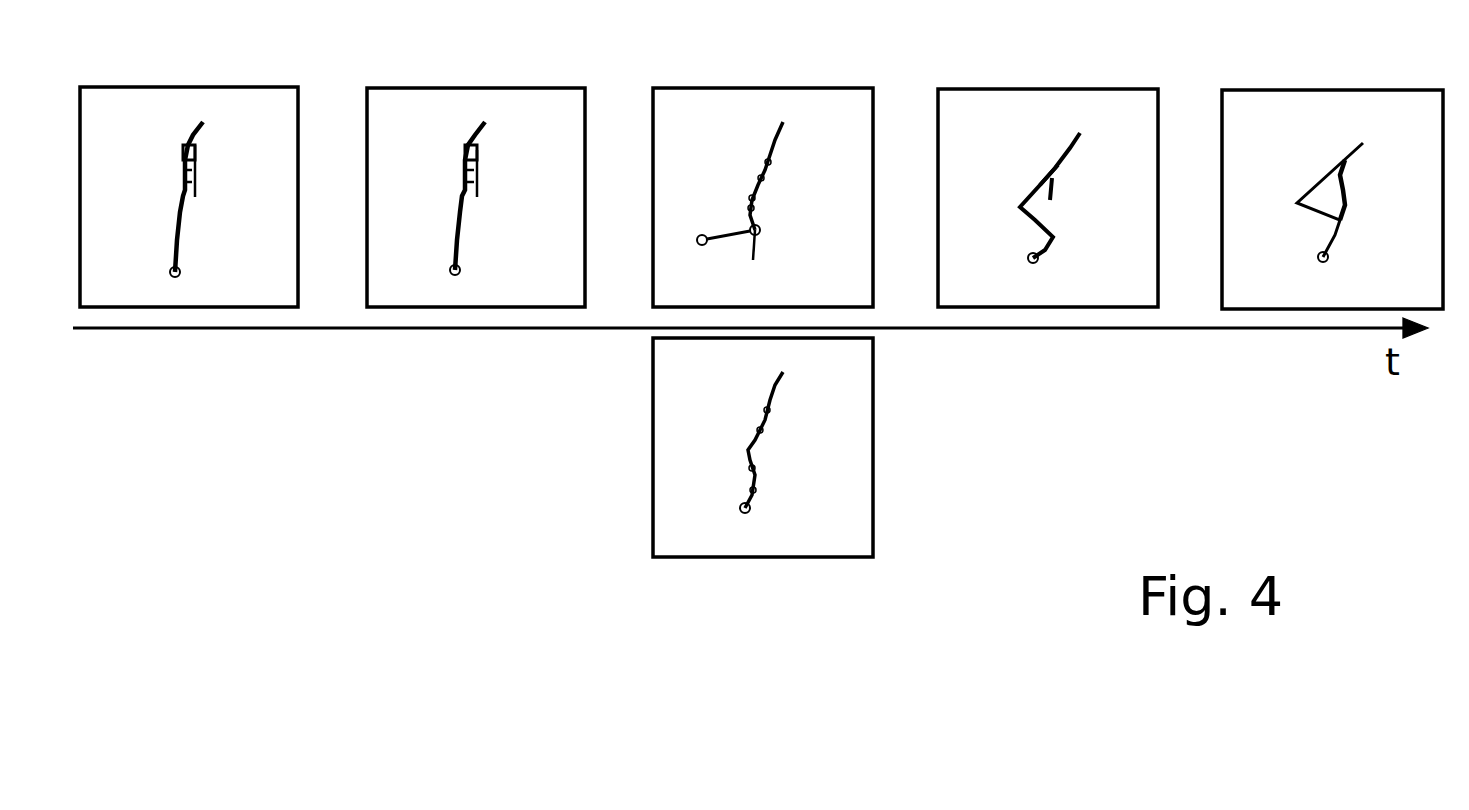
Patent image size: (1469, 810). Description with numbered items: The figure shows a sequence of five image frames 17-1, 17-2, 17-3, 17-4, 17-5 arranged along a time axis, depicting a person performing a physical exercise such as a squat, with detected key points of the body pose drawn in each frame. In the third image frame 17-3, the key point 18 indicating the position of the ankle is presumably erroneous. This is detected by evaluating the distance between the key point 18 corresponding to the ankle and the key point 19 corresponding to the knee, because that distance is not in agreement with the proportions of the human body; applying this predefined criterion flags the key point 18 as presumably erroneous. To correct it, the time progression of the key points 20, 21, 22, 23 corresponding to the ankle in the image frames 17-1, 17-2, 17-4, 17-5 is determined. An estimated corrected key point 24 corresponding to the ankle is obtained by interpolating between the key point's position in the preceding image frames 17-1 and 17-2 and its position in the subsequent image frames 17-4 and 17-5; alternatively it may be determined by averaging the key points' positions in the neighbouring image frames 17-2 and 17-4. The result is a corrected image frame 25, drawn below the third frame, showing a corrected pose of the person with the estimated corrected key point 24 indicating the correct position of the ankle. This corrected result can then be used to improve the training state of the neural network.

The first image frame 17-1 is at (270, 103).
The second image frame 17-2 is at (542, 102).
The third image frame 17-3 is at (828, 103).
The fourth image frame 17-4 is at (1112, 103).
The fifth image frame 17-5 is at (1387, 103).
The key point corresponding to the ankle 18 is at (702, 235).
The key point corresponding to the knee 19 is at (761, 230).
The key point corresponding to the ankle 20 is at (170, 269).
The key point corresponding to the ankle 21 is at (450, 269).
The key point corresponding to the ankle 22 is at (1027, 258).
The key point corresponding to the ankle 23 is at (1317, 257).
The estimated corrected key point 24 is at (739, 508).
The corrected image frame 25 is at (830, 545).